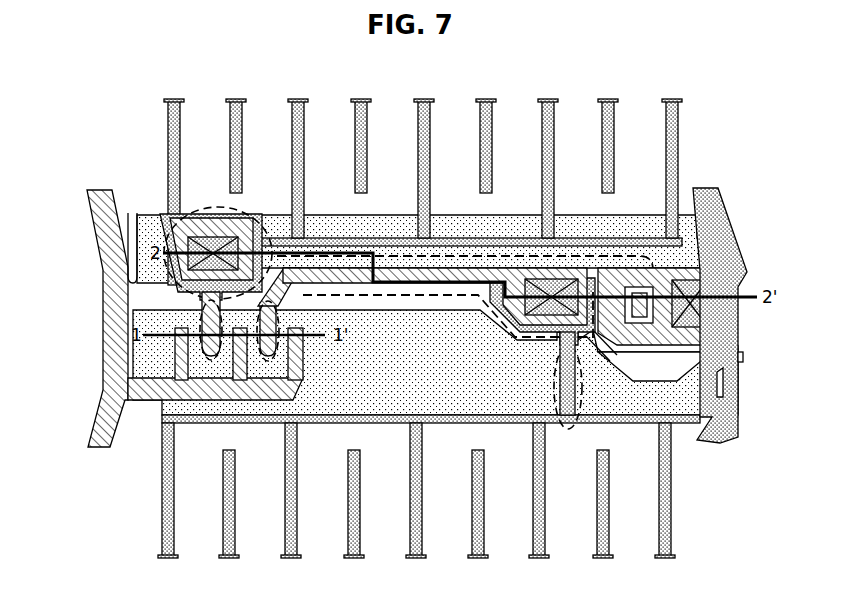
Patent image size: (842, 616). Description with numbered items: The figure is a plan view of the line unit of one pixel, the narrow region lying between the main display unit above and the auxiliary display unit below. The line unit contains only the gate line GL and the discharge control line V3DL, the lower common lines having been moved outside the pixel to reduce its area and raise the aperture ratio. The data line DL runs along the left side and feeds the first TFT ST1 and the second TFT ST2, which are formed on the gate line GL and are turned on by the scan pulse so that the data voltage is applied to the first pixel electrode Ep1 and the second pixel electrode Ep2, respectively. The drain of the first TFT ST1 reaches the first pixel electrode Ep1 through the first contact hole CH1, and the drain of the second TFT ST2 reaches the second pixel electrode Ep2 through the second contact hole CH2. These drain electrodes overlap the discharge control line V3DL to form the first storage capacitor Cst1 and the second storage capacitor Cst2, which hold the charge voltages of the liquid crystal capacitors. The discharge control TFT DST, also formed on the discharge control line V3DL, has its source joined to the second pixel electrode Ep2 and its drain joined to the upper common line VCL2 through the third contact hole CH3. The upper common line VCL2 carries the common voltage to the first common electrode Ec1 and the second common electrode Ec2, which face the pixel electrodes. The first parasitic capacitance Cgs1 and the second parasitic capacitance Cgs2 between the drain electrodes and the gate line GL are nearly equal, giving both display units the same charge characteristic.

The data line DL is at (88, 206).
The discharge control line V3DL is at (135, 272).
The gate line GL is at (127, 357).
The first TFT ST1 is at (196, 400).
The second TFT ST2 is at (285, 400).
The first parasitic capacitance Cgs1 is at (211, 368).
The second parasitic capacitance Cgs2 is at (268, 368).
The first storage capacitor Cst1 is at (205, 204).
The second storage capacitor Cst2 is at (455, 250).
The first contact hole CH1 is at (236, 236).
The second contact hole CH2 is at (536, 280).
The third contact hole CH3 is at (715, 318).
The first common electrode Ec1 is at (612, 136).
The second common electrode Ec2 is at (608, 512).
The first pixel electrode Ep1 is at (680, 157).
The second pixel electrode Ep2 is at (670, 478).
The upper common line VCL2 is at (728, 225).
The discharge control TFT DST is at (610, 360).